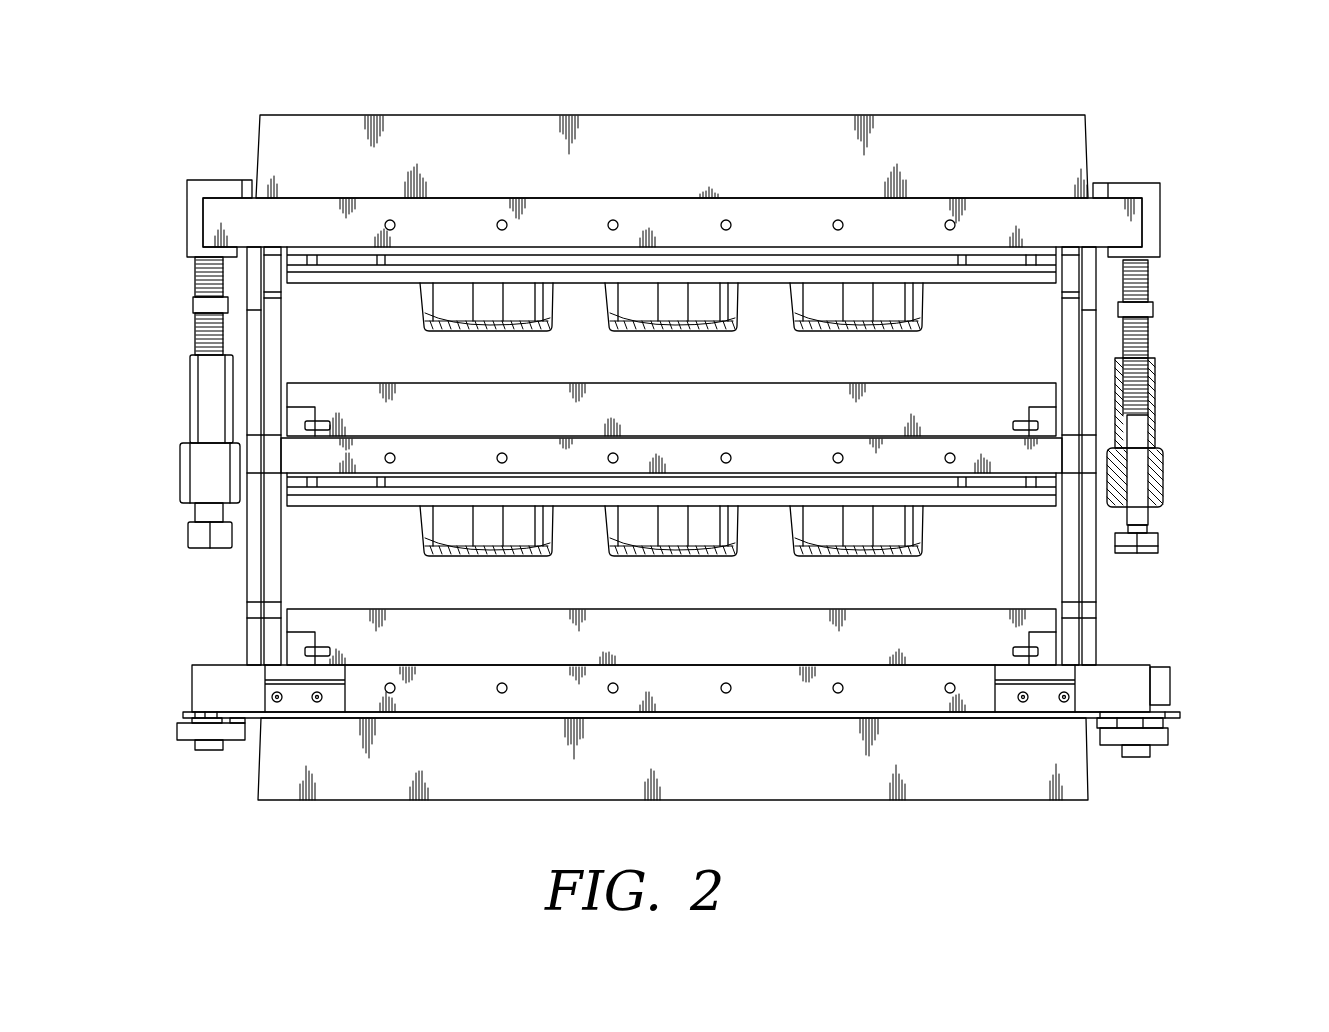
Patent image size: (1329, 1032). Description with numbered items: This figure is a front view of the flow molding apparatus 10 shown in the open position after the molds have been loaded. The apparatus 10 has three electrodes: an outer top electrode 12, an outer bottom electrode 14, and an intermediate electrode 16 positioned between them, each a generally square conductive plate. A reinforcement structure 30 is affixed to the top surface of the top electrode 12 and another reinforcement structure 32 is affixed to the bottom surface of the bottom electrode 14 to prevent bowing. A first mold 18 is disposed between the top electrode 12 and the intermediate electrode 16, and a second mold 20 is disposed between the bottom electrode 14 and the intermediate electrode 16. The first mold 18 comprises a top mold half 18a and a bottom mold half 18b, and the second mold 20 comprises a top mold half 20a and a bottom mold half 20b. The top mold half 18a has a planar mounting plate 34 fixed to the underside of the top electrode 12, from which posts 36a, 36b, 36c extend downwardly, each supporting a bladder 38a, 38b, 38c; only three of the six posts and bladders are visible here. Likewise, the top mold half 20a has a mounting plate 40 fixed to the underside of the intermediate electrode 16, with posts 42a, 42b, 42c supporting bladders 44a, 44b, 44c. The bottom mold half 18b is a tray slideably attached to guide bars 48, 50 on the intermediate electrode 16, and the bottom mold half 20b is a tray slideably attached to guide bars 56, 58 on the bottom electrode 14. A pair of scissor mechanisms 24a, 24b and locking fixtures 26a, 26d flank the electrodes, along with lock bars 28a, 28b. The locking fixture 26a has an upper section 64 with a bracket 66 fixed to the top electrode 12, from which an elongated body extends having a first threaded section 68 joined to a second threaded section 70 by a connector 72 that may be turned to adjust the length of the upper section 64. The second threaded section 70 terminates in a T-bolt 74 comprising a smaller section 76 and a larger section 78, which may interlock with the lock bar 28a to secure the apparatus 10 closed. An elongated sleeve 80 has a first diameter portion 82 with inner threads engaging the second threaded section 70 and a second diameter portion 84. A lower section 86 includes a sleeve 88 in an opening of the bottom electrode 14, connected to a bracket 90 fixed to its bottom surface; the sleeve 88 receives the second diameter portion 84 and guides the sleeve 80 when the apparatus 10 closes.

The flow molding apparatus 10 is at (709, 433).
The top electrode 12 is at (465, 220).
The bottom electrode 14 is at (470, 690).
The intermediate electrode 16 is at (1005, 462).
The first mold 18 is at (669, 341).
The top mold half 18a is at (671, 302).
The bottom mold half 18b is at (671, 409).
The second mold 20 is at (668, 569).
The top mold half 20a is at (671, 526).
The bottom mold half 20b is at (671, 637).
The scissor mechanism 24a is at (1092, 578).
The scissor mechanism 24b is at (250, 592).
The locking fixture 26a is at (1174, 309).
The locking fixture 26d is at (195, 320).
The lock bar 28a is at (1168, 740).
The lock bar 28b is at (180, 730).
The reinforcement structure 30 is at (975, 152).
The reinforcement structure 32 is at (825, 768).
The mounting plate 34 is at (1035, 285).
The post 36a is at (486, 332).
The post 36b is at (671, 330).
The post 36c is at (855, 327).
The bladder 38a is at (430, 320).
The bladder 38b is at (695, 315).
The bladder 38c is at (818, 320).
The mounting plate 40 is at (1030, 506).
The post 42a is at (486, 554).
The post 42b is at (689, 551).
The post 42c is at (855, 549).
The bladder 44a is at (432, 548).
The bladder 44b is at (735, 528).
The bladder 44c is at (825, 545).
The guide bar 48 is at (300, 408).
The guide bar 50 is at (1043, 412).
The guide bar 56 is at (300, 634).
The guide bar 58 is at (1030, 634).
The upper section 64 is at (1209, 419).
The bracket 66 is at (1162, 213).
The first threaded section 68 is at (1148, 288).
The second threaded section 70 is at (1150, 412).
The connector 72 is at (1155, 310).
The T-bolt 74 is at (1150, 533).
The smaller section 76 is at (1140, 525).
The larger section 78 is at (1167, 559).
The elongated sleeve 80 is at (1155, 435).
The first diameter portion 82 is at (1167, 403).
The second diameter portion 84 is at (1165, 472).
The lower section 86 is at (709, 707).
The sleeve 88 is at (1165, 680).
The bracket 90 is at (1174, 716).